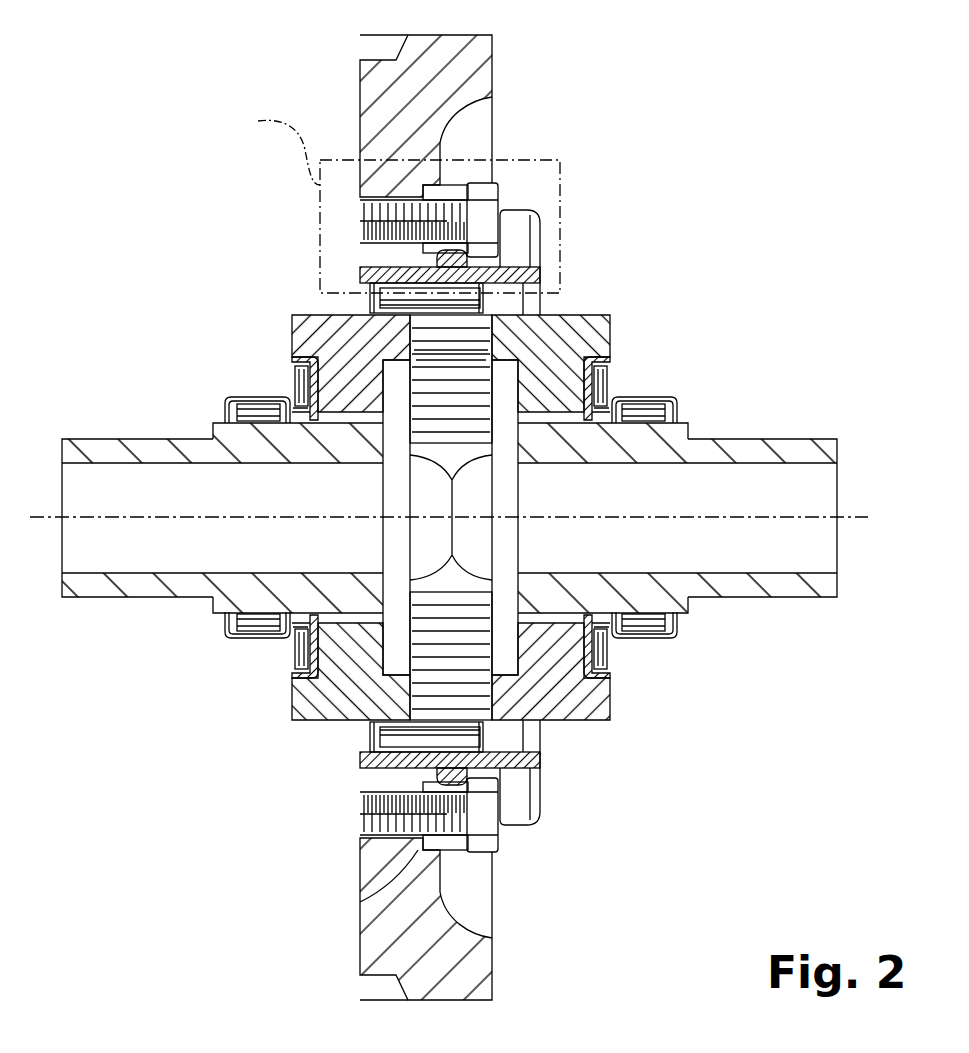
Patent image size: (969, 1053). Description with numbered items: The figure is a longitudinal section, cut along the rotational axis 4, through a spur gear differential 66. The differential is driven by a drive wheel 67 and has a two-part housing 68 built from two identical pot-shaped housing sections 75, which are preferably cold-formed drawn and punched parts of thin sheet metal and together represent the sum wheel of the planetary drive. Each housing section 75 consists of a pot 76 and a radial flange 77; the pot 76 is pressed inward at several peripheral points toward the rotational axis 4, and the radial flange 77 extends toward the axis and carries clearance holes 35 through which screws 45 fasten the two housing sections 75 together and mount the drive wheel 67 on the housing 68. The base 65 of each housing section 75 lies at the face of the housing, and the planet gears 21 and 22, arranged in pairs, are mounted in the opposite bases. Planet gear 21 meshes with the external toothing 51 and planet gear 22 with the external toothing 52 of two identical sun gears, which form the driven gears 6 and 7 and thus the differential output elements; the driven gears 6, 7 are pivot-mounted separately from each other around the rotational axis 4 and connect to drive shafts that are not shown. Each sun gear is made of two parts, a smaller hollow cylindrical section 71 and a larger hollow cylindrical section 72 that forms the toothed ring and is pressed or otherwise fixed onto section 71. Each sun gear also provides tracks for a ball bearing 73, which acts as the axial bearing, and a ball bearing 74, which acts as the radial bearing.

The rotational axis 4 is at (855, 517).
The driven gear 6 is at (118, 595).
The driven gear 7 is at (782, 600).
The planet gear 21 is at (468, 380).
The planet gear 22 is at (423, 342).
The clearance hole 35 is at (370, 895).
The screw 45 is at (488, 205).
The external toothing 51 is at (395, 760).
The external toothing 52 is at (508, 300).
The base 65 is at (368, 735).
The spur gear differential 66 is at (712, 193).
The drive wheel 67 is at (368, 45).
The housing 68 is at (543, 218).
The hollow cylindrical section 71 is at (745, 443).
The hollow cylindrical section 72 is at (552, 370).
The ball bearing 73 is at (602, 668).
The ball bearing 74 is at (652, 625).
The housing section 75 is at (362, 795).
The pot 76 is at (520, 815).
The radial flange 77 is at (445, 857).